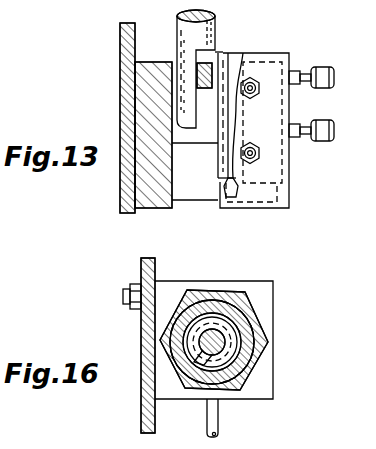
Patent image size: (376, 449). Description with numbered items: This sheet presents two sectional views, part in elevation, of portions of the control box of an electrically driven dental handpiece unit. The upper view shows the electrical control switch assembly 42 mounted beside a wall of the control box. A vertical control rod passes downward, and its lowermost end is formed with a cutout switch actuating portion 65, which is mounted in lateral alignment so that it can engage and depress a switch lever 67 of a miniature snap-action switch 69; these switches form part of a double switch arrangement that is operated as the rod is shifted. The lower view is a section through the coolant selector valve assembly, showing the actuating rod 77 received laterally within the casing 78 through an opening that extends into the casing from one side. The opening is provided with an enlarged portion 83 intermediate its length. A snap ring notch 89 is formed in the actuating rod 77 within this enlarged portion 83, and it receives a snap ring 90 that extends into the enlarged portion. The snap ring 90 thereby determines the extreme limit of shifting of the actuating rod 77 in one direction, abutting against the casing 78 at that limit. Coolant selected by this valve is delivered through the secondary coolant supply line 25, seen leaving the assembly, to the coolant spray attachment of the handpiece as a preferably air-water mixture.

In FIG. 16, the secondary coolant supply line 25 is at (216, 419).
In FIG. 13, the electrical control switch assembly 42 is at (292, 158).
In FIG. 13, the cutout switch actuating portion 65 is at (184, 88).
In FIG. 13, the switch lever 67 is at (219, 63).
In FIG. 13, the miniature snap-action switch 69 is at (231, 188).
In FIG. 13, the actuating rod 77 is at (213, 24).
In FIG. 16, the actuating rod 77 is at (226, 338).
In FIG. 16, the casing 78 is at (260, 294).
In FIG. 16, the enlarged portion 83 is at (203, 352).
In FIG. 16, the snap ring notch 89 is at (255, 372).
In FIG. 16, the snap ring 90 is at (233, 351).